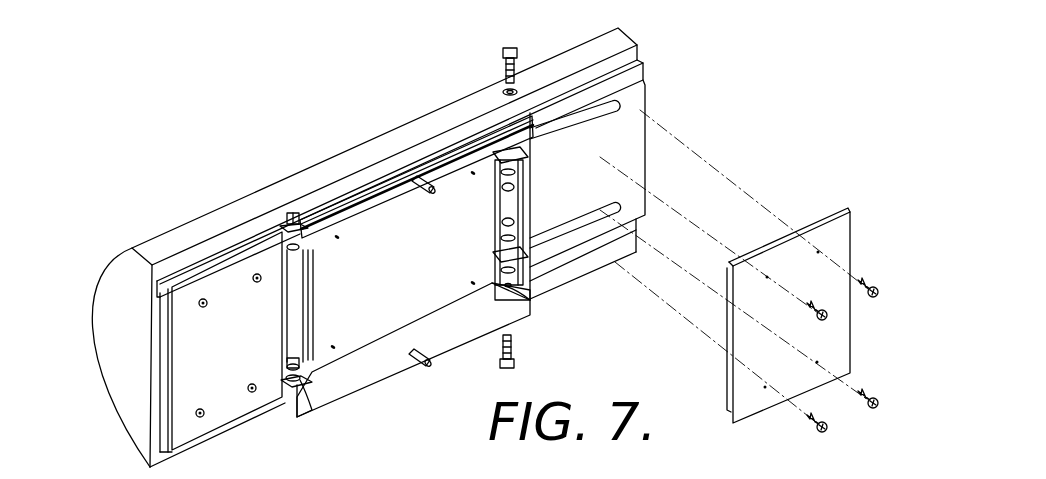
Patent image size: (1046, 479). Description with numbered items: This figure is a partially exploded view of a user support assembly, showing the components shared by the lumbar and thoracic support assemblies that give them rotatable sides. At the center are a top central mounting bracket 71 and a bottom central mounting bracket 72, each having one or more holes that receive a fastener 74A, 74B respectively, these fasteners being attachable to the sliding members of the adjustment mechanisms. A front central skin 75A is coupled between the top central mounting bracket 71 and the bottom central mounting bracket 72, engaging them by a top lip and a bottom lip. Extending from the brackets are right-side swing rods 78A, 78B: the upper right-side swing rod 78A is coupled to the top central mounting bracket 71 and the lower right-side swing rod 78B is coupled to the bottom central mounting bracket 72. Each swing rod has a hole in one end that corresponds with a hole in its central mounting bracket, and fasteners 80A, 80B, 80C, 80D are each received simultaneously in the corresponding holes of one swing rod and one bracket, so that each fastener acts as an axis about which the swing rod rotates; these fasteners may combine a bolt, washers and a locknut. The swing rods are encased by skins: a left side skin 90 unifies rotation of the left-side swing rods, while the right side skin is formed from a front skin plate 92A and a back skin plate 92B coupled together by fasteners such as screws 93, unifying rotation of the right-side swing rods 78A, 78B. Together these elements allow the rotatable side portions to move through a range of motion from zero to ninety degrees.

The top central mounting bracket 71 is at (367, 202).
The bottom central mounting bracket 72 is at (373, 372).
The fastener 74A is at (428, 180).
The fastener 74B is at (425, 364).
The front central skin 75A is at (431, 265).
The right-side swing rod 78A is at (617, 107).
The right-side swing rod 78B is at (617, 201).
The fastener 80A is at (296, 212).
The fastener 80B is at (302, 378).
The fastener 80C is at (507, 46).
The fastener 80D is at (512, 350).
The left side skin 90 is at (158, 413).
The front skin plate 92A is at (643, 70).
The back skin plate 92B is at (850, 212).
The screws 93 is at (826, 425).